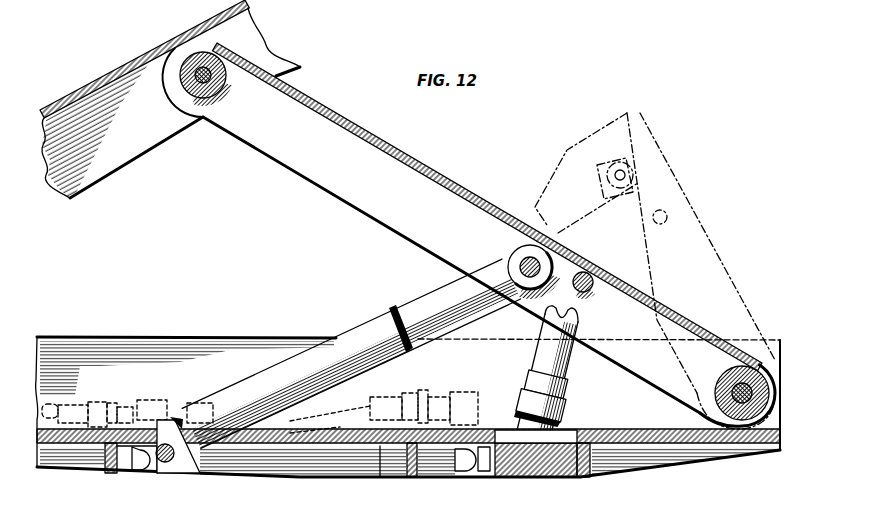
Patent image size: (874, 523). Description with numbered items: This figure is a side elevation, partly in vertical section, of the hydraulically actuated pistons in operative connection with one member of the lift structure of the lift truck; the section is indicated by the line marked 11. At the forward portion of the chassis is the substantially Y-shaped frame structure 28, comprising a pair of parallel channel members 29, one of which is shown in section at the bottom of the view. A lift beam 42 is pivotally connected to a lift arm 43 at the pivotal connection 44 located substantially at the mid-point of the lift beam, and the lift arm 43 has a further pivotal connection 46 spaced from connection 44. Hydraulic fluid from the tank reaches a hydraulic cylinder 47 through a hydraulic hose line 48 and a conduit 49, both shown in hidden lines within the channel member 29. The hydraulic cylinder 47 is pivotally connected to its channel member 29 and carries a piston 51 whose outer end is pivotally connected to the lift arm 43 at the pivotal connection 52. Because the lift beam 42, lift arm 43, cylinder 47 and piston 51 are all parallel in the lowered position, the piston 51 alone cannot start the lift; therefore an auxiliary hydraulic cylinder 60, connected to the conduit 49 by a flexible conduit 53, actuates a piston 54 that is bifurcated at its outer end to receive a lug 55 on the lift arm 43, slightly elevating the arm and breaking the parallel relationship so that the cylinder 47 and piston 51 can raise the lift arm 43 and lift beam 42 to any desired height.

The section line 11- 11 is at (700, 309).
The Y-shaped frame structure 28 is at (210, 325).
The channel member 29 is at (450, 371).
The lift beam 42 is at (112, 72).
The lift arm 43 is at (565, 162).
The pivotal connection 44 is at (200, 90).
The pivotal connection 46 is at (728, 386).
The hydraulic cylinder 47 is at (312, 360).
The hydraulic hose line 48 is at (57, 398).
The conduit 49 is at (150, 416).
The piston 51 is at (440, 293).
The pivotal connection 52 is at (523, 261).
The flexible conduit 53 is at (370, 400).
The piston 54 is at (535, 356).
The lug 55 is at (594, 277).
The auxiliary hydraulic cylinder 60 is at (518, 399).